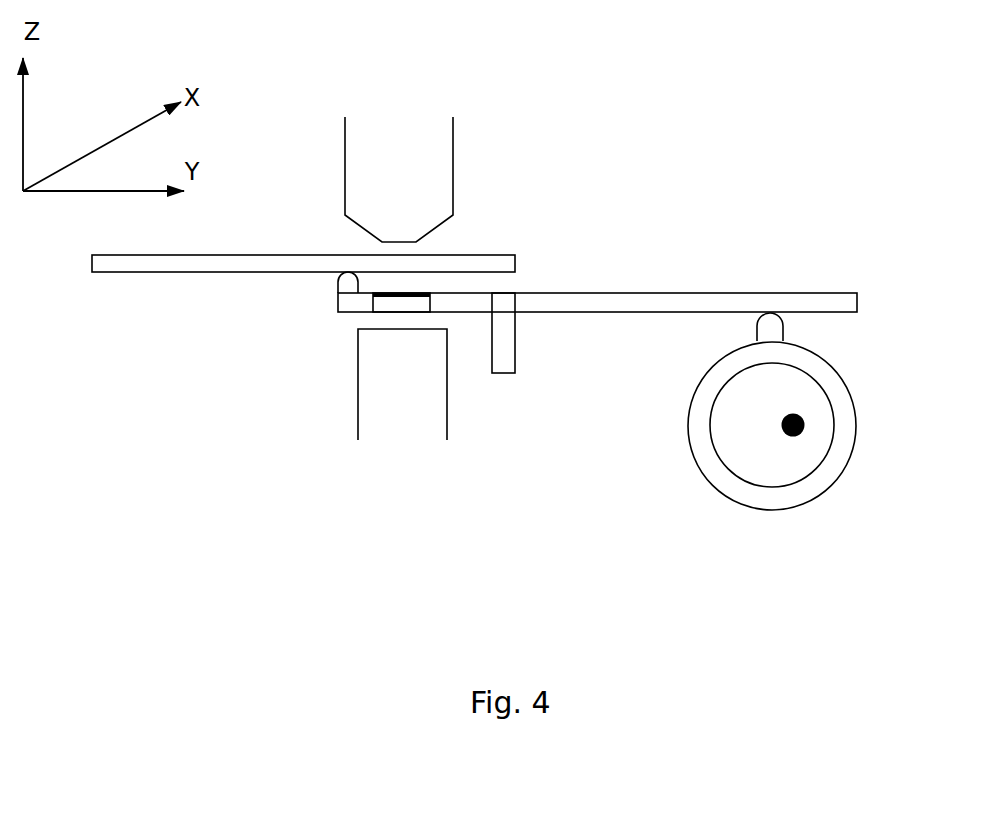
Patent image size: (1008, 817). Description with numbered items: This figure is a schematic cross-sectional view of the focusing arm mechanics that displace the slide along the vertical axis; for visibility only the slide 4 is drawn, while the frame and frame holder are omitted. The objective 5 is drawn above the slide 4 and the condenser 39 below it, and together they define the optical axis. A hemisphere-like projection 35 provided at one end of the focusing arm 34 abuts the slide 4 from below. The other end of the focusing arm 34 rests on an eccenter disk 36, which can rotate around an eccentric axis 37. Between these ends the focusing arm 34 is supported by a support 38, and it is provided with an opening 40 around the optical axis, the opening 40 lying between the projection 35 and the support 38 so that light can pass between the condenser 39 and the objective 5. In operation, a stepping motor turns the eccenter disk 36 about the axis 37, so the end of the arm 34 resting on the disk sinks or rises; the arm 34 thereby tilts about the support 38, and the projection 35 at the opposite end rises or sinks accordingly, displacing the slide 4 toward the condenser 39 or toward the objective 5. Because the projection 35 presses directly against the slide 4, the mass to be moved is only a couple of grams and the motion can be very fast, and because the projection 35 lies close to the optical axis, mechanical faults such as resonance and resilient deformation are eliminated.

The slide 4 is at (518, 250).
The objective 5 is at (461, 109).
The focusing arm 34 is at (331, 305).
The projection 35 is at (335, 266).
The eccenter disk 36 is at (798, 453).
The eccentric axis 37 is at (814, 427).
The support 38 is at (506, 336).
The condenser 39 is at (346, 359).
The opening 40 is at (402, 304).